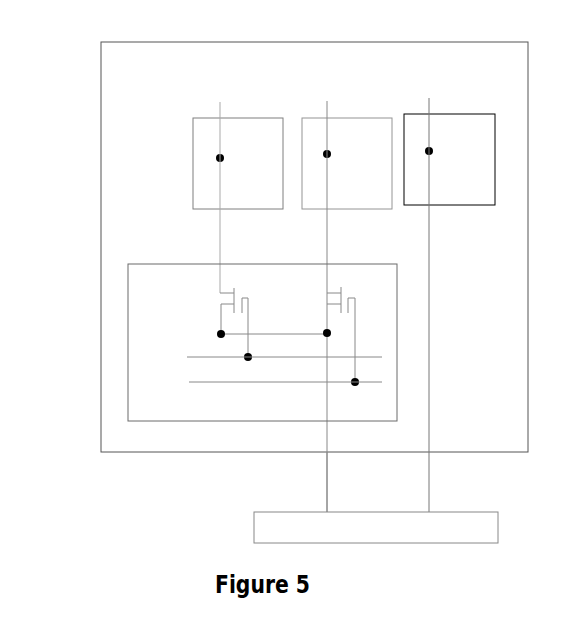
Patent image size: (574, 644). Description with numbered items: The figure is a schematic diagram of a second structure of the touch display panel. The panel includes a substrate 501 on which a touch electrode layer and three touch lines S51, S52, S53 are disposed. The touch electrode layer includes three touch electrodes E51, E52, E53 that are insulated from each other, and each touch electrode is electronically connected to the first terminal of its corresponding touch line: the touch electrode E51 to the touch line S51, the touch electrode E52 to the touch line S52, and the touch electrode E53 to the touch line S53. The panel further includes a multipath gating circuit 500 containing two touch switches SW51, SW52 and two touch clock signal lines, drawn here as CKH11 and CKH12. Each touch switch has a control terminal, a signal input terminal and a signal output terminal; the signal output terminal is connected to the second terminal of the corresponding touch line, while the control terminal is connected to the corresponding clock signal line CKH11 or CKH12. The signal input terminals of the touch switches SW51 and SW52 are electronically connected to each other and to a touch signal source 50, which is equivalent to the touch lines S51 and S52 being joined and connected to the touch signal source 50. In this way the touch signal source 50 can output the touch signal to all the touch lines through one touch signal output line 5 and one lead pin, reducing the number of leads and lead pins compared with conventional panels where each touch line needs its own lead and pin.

The substrate 501 is at (138, 107).
The multipath gating circuit 500 is at (128, 317).
The touch signal output line 5 is at (327, 463).
The touch signal source 50 is at (376, 527).
The touch electrode E51 is at (238, 163).
The touch electrode E52 is at (347, 163).
The touch electrode E53 is at (449, 159).
The touch line S51 is at (218, 184).
The touch line S52 is at (328, 293).
The touch line S53 is at (432, 292).
The touch switch SW51 is at (272, 314).
The touch switch SW52 is at (351, 327).
The clock signal line CKH11 is at (257, 356).
The clock signal line CKH12 is at (257, 381).